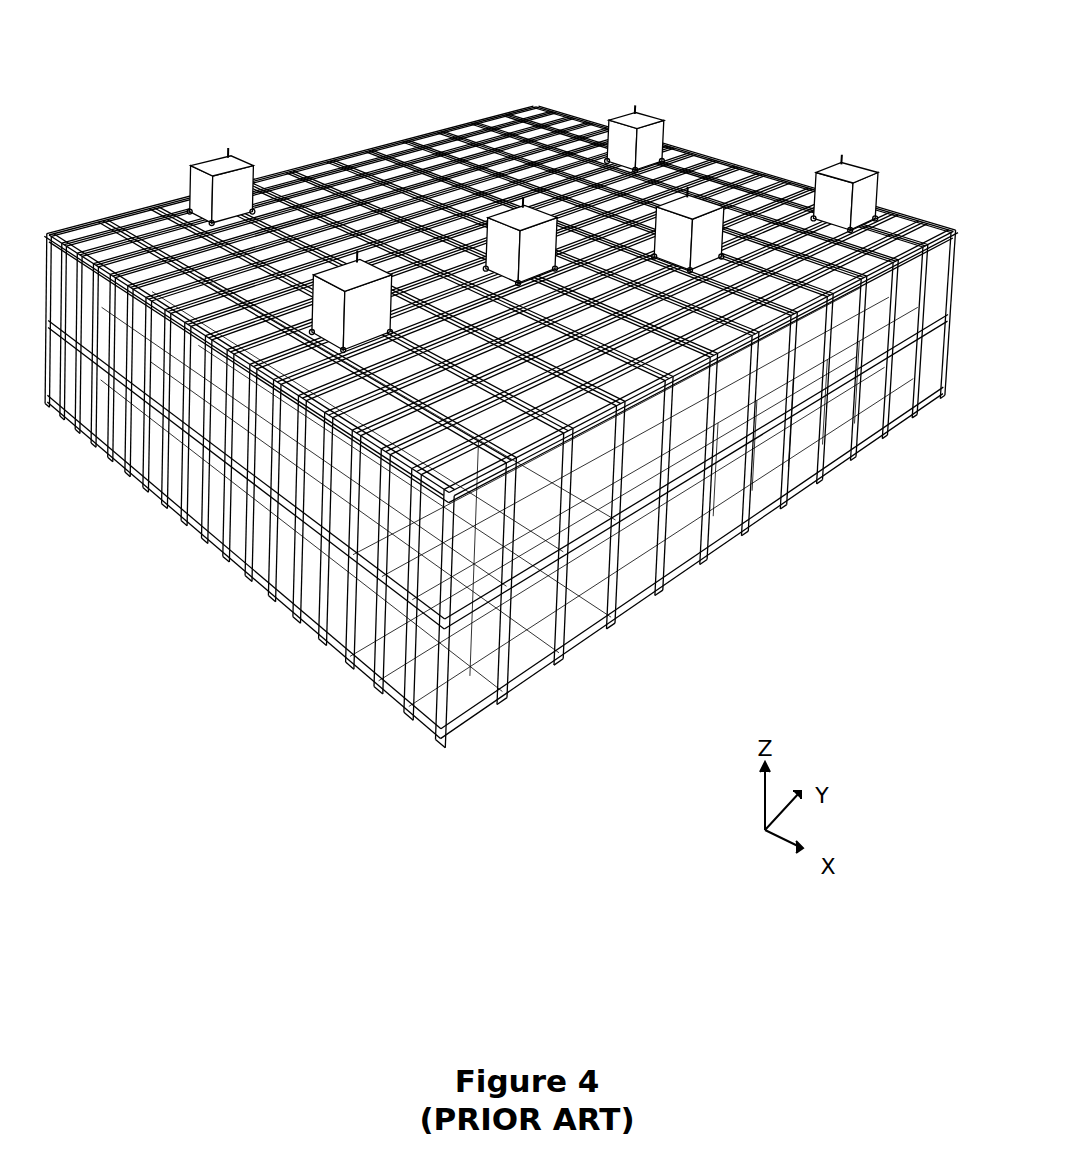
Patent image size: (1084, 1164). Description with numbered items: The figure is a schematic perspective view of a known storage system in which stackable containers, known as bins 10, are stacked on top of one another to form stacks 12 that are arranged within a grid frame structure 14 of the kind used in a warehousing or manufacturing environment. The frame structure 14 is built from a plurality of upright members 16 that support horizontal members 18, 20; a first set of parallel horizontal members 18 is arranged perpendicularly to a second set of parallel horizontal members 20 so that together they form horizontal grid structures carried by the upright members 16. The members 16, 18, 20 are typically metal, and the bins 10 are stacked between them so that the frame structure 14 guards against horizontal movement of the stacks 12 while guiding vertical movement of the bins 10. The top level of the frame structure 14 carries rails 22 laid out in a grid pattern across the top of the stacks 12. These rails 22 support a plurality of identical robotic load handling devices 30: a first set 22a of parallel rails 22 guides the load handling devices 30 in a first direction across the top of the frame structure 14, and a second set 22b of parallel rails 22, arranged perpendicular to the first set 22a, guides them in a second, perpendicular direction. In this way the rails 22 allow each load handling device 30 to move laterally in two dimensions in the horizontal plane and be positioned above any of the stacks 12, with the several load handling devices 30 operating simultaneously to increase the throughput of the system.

The bins 10 is at (475, 625).
The stacks 12 is at (867, 445).
The grid frame structure 14 is at (501, 423).
The upright members 16 is at (365, 622).
The first set of parallel horizontal members 18 is at (595, 537).
The second set of parallel horizontal members 20 is at (280, 502).
The rails 22 is at (501, 274).
The first set of parallel rails 22a is at (273, 358).
The second set of parallel rails 22b is at (365, 222).
The load handling devices 30 is at (655, 130).